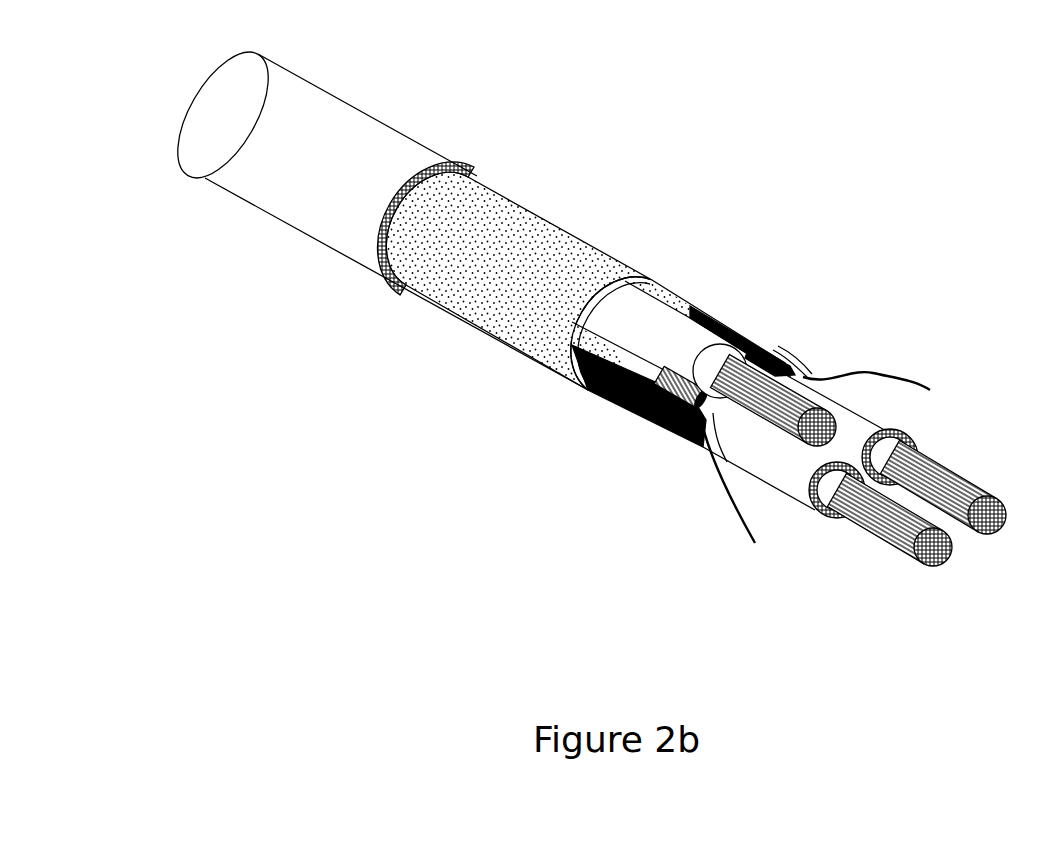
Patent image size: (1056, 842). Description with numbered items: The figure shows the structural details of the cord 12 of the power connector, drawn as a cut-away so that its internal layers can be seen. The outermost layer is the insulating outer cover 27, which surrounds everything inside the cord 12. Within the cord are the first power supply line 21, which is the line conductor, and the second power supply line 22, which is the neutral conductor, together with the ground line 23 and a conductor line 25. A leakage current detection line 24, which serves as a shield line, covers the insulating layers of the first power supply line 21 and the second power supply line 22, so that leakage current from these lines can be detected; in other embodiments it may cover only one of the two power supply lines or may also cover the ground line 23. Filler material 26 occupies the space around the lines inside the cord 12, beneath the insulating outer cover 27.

The cord 12 is at (318, 82).
The insulating outer cover 27 is at (480, 171).
The leakage current detection line 24 is at (565, 248).
The filler material 26 is at (663, 290).
The ground line 23 is at (667, 327).
The conductor line 25 is at (610, 397).
The first power supply line 21 is at (762, 455).
The second power supply line 22 is at (852, 420).